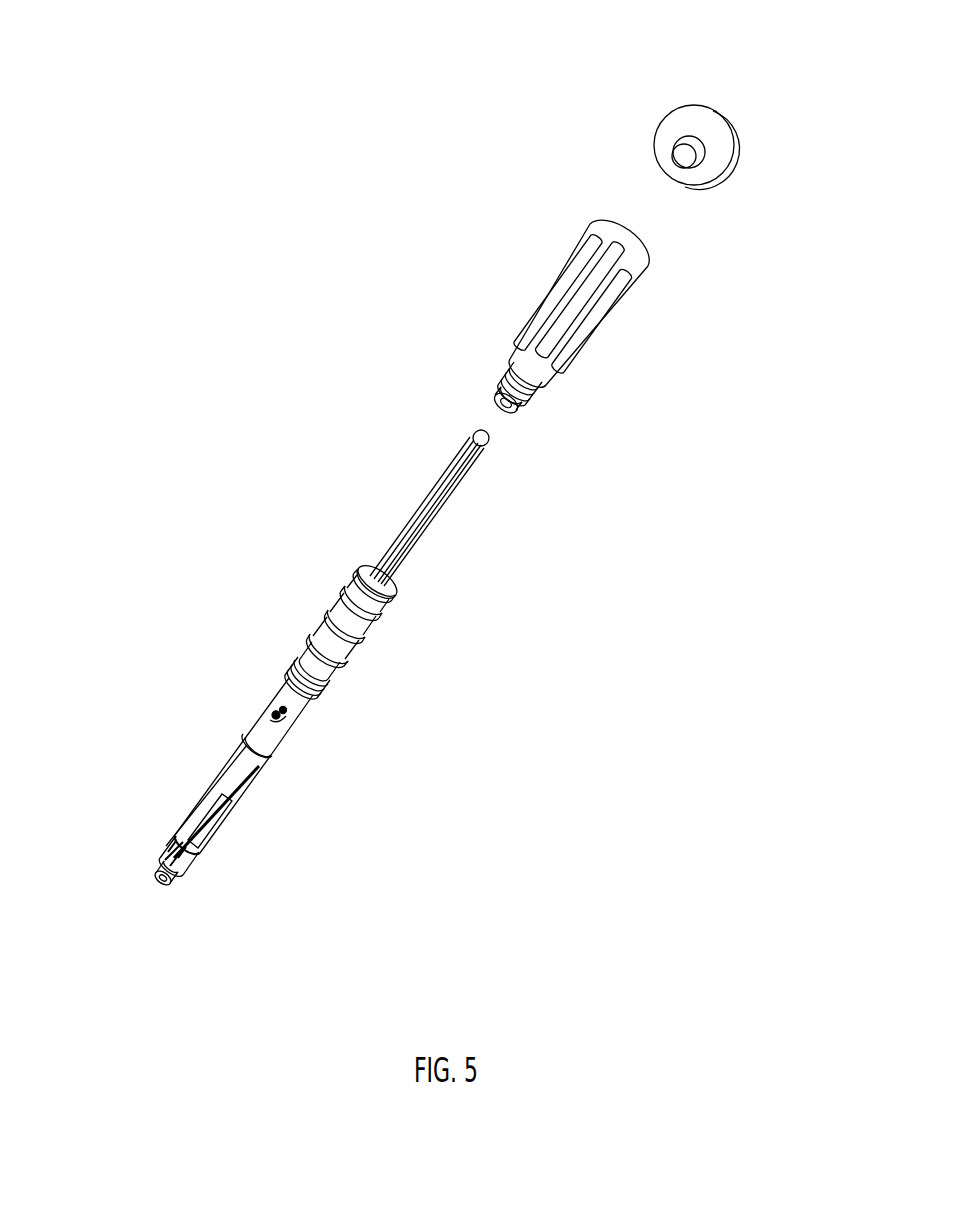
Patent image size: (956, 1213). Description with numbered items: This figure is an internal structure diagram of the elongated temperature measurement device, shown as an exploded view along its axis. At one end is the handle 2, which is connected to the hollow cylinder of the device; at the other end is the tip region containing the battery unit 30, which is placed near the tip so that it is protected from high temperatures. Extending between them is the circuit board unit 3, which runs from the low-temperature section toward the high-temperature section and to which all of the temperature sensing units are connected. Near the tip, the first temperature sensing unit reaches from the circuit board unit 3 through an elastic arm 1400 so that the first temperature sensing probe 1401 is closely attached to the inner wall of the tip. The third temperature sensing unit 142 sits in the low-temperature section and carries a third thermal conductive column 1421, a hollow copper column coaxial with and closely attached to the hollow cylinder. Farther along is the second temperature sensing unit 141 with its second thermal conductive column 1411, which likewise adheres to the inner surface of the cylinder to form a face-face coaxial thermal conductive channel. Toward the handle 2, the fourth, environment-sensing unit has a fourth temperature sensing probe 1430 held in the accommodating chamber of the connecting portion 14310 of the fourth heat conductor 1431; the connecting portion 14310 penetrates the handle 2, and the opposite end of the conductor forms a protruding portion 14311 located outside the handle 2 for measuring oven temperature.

The handle 2 is at (550, 283).
The circuit board unit 3 is at (413, 520).
The battery unit 30 is at (205, 840).
The second temperature sensing unit 141 is at (343, 680).
The third temperature sensing unit 142 is at (272, 785).
The elastic arm 1400 is at (180, 823).
The first temperature sensing probe 1401 is at (163, 857).
The second thermal conductive column 1411 is at (313, 655).
The third thermal conductive column 1421 is at (263, 763).
The fourth temperature sensing probe 1430 is at (490, 448).
The fourth heat conductor 1431 is at (644, 133).
The connecting portion 14310 is at (685, 152).
The protruding portion 14311 is at (728, 117).